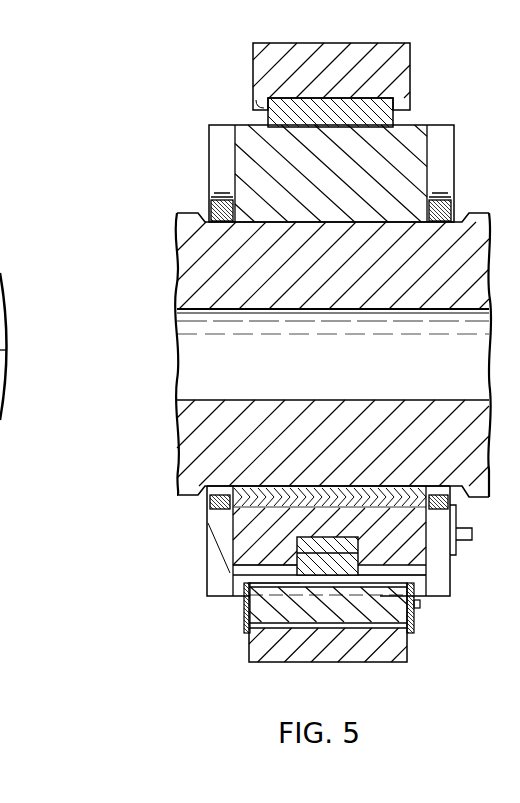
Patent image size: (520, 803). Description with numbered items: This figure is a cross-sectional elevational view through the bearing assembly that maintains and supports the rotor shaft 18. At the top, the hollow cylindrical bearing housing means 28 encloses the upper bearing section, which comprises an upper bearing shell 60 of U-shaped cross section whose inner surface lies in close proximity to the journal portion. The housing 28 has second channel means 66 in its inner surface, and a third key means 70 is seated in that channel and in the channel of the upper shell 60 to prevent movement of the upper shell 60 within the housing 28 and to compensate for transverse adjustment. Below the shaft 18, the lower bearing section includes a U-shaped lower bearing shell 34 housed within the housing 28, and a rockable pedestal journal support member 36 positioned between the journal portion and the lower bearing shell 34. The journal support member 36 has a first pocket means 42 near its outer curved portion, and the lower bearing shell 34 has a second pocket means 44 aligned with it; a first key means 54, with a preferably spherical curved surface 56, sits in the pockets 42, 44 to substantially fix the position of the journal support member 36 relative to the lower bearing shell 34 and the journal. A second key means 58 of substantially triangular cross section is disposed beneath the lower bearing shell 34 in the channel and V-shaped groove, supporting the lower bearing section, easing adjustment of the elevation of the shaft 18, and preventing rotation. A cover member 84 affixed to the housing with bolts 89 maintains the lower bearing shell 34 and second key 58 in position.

The shaft 18 is at (483, 220).
The bearing housing means 28 is at (407, 67).
The lower bearing shell 34 is at (403, 577).
The rockable pedestal journal support member 36 is at (247, 530).
The first pocket means 42 is at (295, 554).
The second pocket means 44 is at (352, 560).
The first key means 54 is at (272, 594).
The curved surface 56 is at (300, 583).
The second key means 58 is at (414, 619).
The upper bearing shell 60 is at (243, 150).
The second channel means 66 is at (258, 107).
The third key means 70 is at (387, 120).
The cover member 84 is at (412, 630).
The bolt 89 is at (420, 604).